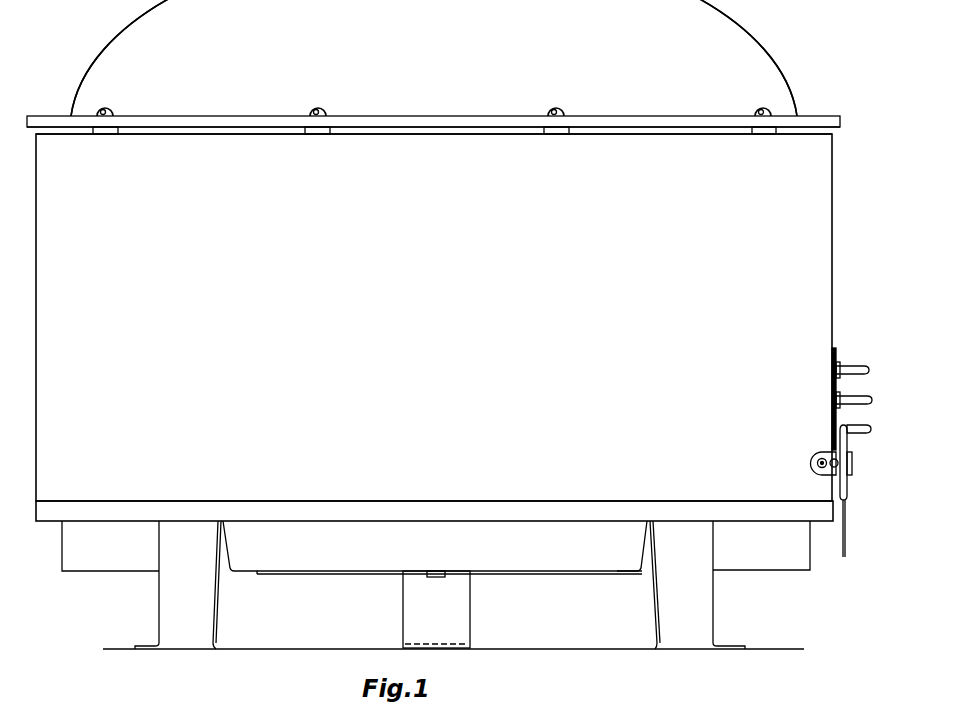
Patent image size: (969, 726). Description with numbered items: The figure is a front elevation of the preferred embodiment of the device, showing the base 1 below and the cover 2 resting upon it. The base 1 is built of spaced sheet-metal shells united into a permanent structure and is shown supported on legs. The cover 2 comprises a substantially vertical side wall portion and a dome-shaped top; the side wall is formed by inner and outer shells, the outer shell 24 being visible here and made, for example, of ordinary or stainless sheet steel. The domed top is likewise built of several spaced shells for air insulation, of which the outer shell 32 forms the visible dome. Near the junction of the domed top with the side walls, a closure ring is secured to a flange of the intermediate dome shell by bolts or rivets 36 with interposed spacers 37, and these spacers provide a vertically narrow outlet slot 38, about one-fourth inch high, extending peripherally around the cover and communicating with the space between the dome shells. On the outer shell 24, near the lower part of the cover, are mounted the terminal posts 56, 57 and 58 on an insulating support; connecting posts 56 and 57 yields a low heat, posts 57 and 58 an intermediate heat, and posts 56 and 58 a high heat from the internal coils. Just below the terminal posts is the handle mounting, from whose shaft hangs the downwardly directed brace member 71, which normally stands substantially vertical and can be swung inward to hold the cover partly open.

The base 1 is at (92, 586).
The cover 2 is at (84, 52).
The outer shell 24 is at (834, 238).
The outer shell 32 is at (767, 54).
The bolts or rivets 36 is at (558, 113).
The spacers 37 is at (557, 134).
The outlet slot 38 is at (616, 134).
The terminal post 56 is at (846, 366).
The terminal post 57 is at (848, 400).
The terminal post 58 is at (860, 424).
The brace member 71 is at (846, 556).